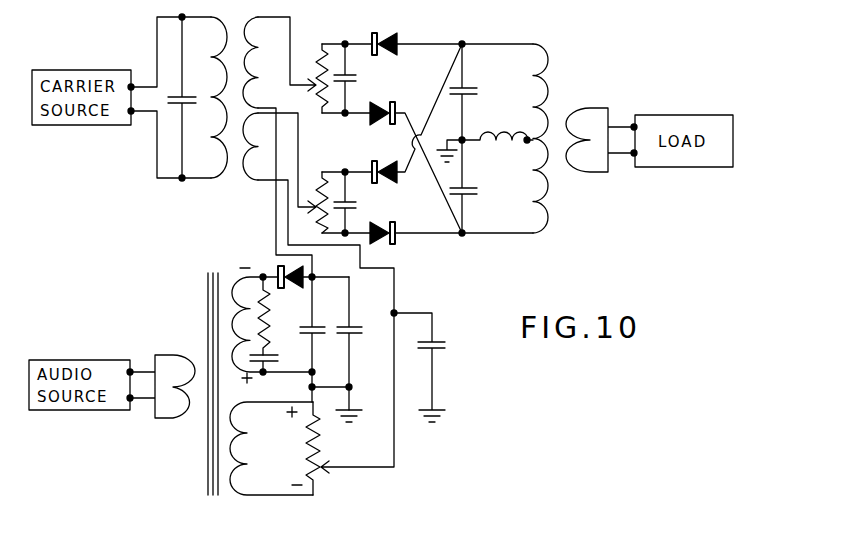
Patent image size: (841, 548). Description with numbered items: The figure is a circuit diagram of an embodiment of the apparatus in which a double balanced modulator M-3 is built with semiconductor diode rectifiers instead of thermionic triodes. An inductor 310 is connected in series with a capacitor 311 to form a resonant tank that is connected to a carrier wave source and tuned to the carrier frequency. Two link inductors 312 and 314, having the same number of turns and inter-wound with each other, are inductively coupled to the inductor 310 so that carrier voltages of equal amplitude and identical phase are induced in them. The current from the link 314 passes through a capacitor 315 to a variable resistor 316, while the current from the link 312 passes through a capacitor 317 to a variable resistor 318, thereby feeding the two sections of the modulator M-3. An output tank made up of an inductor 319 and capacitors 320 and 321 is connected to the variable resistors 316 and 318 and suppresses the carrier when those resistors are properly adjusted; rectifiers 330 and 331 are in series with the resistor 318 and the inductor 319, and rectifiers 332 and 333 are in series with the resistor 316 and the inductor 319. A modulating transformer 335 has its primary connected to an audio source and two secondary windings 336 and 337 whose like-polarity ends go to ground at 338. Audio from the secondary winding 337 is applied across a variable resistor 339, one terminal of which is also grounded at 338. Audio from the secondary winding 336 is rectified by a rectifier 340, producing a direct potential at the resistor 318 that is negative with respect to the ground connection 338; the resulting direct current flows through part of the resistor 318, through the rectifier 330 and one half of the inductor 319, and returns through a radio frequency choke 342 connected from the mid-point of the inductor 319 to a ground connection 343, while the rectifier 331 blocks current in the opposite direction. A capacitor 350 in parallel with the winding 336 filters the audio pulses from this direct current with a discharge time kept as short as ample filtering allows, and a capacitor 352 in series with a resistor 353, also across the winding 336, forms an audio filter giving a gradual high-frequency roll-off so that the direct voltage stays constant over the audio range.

The inductor 310 is at (220, 179).
The capacitor 311 is at (189, 107).
The link inductor 312 is at (243, 32).
The link inductor 314 is at (248, 180).
The capacitor 315 is at (438, 338).
The variable resistor 316 is at (316, 182).
The capacitor 317 is at (367, 309).
The variable resistor 318 is at (318, 62).
The inductor 319 is at (549, 88).
The capacitor 320 is at (465, 86).
The capacitor 321 is at (468, 196).
The rectifier 330 is at (374, 33).
The rectifier 331 is at (383, 102).
The rectifier 332 is at (369, 165).
The rectifier 333 is at (381, 228).
The transformer 335 is at (205, 309).
The secondary winding 336 is at (236, 277).
The secondary winding 337 is at (227, 489).
The ground connection 338 is at (353, 415).
The variable resistor 339 is at (306, 451).
The rectifier 340 is at (275, 267).
The radio frequency choke 342 is at (489, 137).
The ground connection 343 is at (455, 150).
The capacitor 350 is at (318, 323).
The capacitor 352 is at (266, 365).
The resistor 353 is at (270, 322).
The balanced modulator M-3 is at (527, 32).